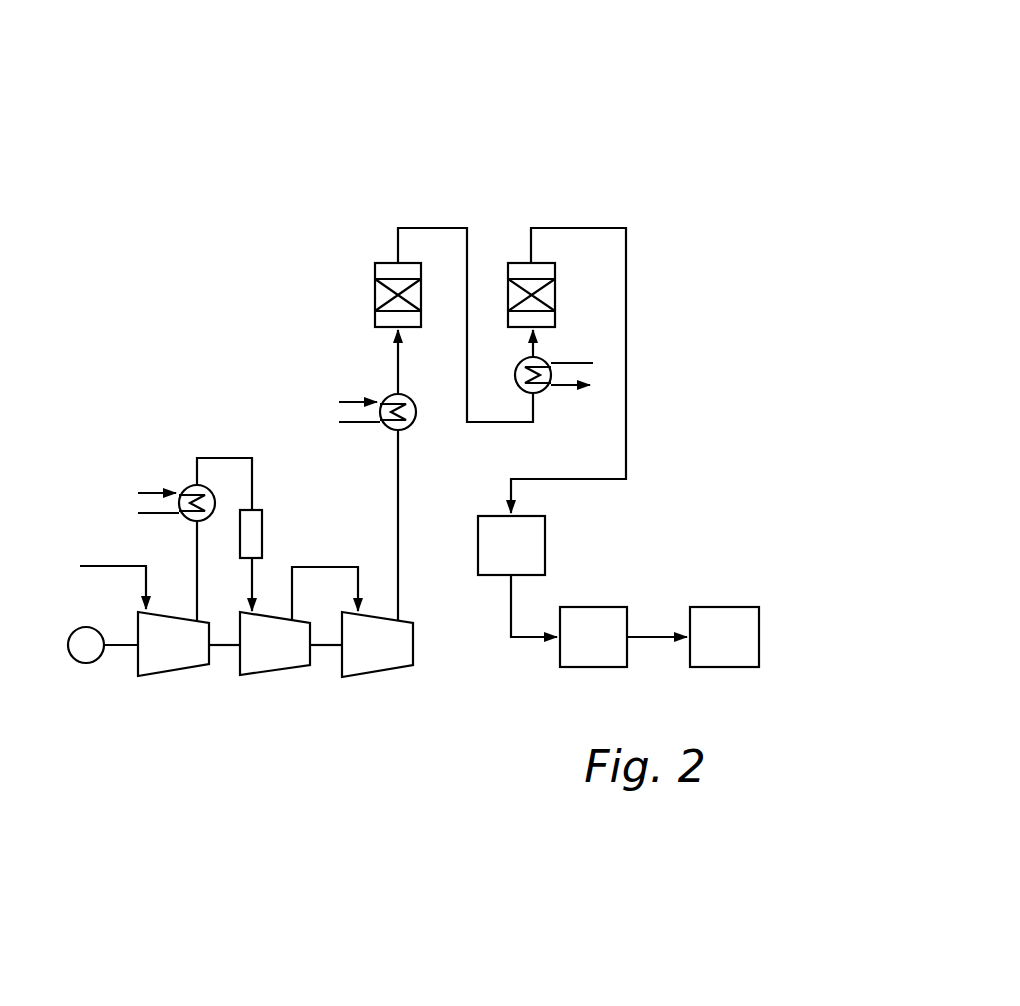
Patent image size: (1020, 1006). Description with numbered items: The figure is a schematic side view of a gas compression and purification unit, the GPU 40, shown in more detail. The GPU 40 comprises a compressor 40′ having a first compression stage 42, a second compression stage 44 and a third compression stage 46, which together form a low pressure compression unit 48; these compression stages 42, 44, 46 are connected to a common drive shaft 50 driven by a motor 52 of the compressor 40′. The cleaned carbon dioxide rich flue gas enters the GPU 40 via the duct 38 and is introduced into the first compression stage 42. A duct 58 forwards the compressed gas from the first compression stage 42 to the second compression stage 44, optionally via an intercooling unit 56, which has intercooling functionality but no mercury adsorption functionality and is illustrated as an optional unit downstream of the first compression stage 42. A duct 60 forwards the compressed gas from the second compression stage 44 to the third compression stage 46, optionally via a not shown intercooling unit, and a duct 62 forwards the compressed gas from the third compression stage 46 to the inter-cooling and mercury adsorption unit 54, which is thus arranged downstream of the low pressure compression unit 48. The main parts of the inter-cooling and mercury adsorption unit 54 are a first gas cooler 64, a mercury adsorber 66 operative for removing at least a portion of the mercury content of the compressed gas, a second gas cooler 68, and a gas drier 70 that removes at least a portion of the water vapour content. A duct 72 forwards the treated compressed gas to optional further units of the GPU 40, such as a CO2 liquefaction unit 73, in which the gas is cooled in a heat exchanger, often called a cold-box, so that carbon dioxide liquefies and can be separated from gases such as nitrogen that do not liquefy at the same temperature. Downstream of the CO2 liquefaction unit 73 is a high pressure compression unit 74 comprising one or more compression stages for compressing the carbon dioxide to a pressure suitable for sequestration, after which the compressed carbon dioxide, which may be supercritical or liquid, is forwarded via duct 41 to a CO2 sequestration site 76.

The duct 38 is at (100, 566).
The GPU 40 is at (620, 138).
The compressor 40′ is at (94, 600).
The duct 41 is at (660, 637).
The first compression stage 42 is at (155, 676).
The second compression stage 44 is at (265, 676).
The third compression stage 46 is at (375, 677).
The low pressure compression unit 48 is at (310, 775).
The common drive shaft 50 is at (225, 648).
The motor 52 is at (86, 663).
The inter-cooling and mercury adsorption unit 54 is at (362, 211).
The intercooling unit 56 is at (203, 430).
The duct 58 is at (197, 550).
The duct 60 is at (320, 567).
The duct 62 is at (400, 478).
The first gas cooler 64 is at (388, 398).
The mercury adsorber 66 is at (375, 273).
The second gas cooler 68 is at (540, 392).
The gas drier 70 is at (521, 262).
The duct 72 is at (626, 430).
The CO2 liquefaction unit 73 is at (490, 575).
The high pressure compression unit 74 is at (580, 667).
The CO2 sequestration site 76 is at (725, 620).